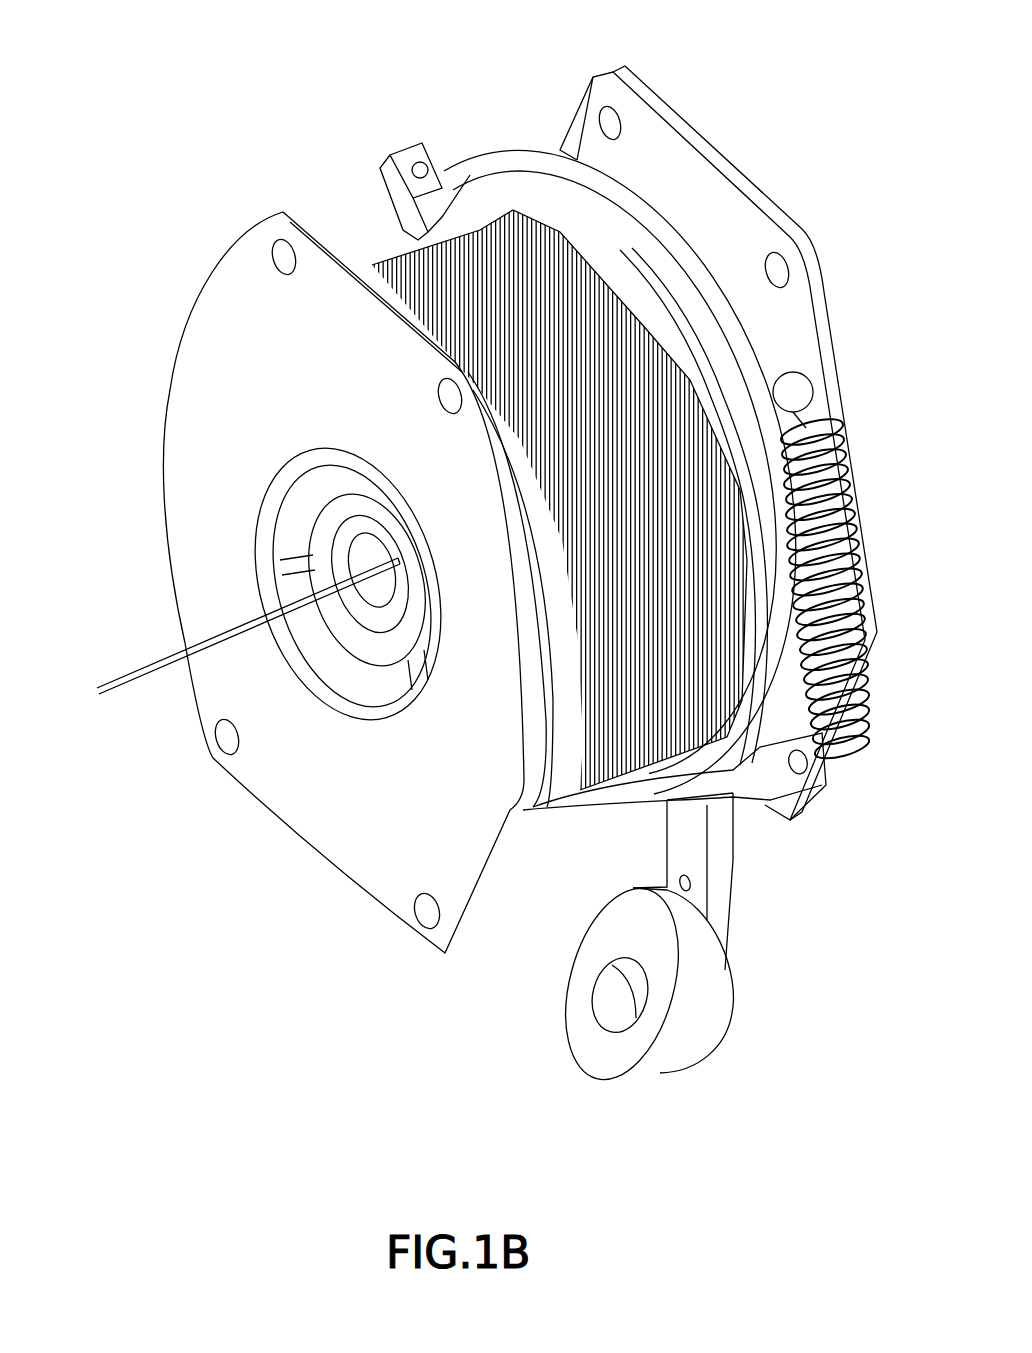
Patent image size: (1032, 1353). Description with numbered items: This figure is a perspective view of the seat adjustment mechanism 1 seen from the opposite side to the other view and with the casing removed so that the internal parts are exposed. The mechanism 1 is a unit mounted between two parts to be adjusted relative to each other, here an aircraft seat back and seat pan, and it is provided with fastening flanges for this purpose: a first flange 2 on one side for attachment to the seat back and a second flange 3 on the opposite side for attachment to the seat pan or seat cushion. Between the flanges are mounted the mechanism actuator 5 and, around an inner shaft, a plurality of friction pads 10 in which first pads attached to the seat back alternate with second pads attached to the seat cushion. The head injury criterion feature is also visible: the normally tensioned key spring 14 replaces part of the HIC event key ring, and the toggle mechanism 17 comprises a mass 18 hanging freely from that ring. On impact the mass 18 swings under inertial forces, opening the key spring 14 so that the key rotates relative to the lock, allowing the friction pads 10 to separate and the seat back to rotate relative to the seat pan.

The mechanism 1 is at (112, 46).
The first flange 2 is at (690, 128).
The second flange 3 is at (255, 377).
The mechanism actuator 5 is at (120, 668).
The friction pads 10 is at (405, 250).
The key spring 14 is at (828, 430).
The toggle mechanism 17 is at (722, 868).
The mass 18 is at (598, 1022).